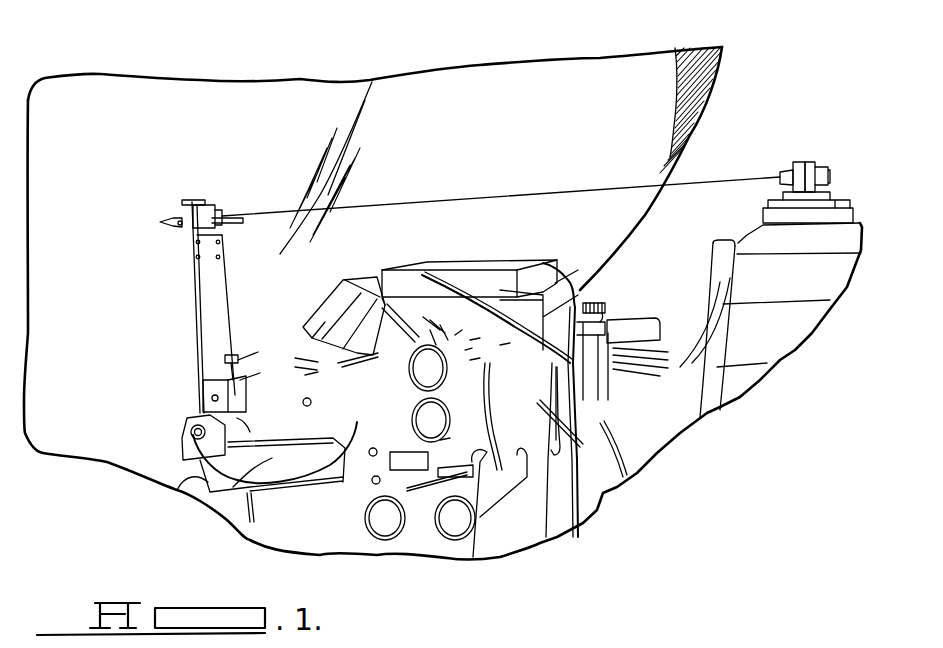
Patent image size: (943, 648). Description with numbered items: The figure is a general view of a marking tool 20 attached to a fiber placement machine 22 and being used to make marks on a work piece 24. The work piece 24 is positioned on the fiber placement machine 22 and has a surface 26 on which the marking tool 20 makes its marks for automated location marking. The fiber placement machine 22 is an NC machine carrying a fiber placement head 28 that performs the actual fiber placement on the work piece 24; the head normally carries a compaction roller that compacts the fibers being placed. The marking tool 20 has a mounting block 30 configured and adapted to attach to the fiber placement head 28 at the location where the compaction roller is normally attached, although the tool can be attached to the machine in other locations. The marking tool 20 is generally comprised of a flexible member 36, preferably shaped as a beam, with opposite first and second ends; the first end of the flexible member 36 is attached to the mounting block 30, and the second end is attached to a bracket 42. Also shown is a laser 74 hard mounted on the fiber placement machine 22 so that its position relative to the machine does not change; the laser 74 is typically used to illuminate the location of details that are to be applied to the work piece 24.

The marking tool 20 is at (176, 306).
The fiber placement machine 22 is at (760, 333).
The work piece 24 is at (522, 78).
The surface 26 is at (553, 144).
The fiber placement head 28 is at (273, 458).
The mounting block 30 is at (200, 400).
The flexible member 36 is at (218, 303).
The bracket 42 is at (182, 237).
The laser 74 is at (797, 165).